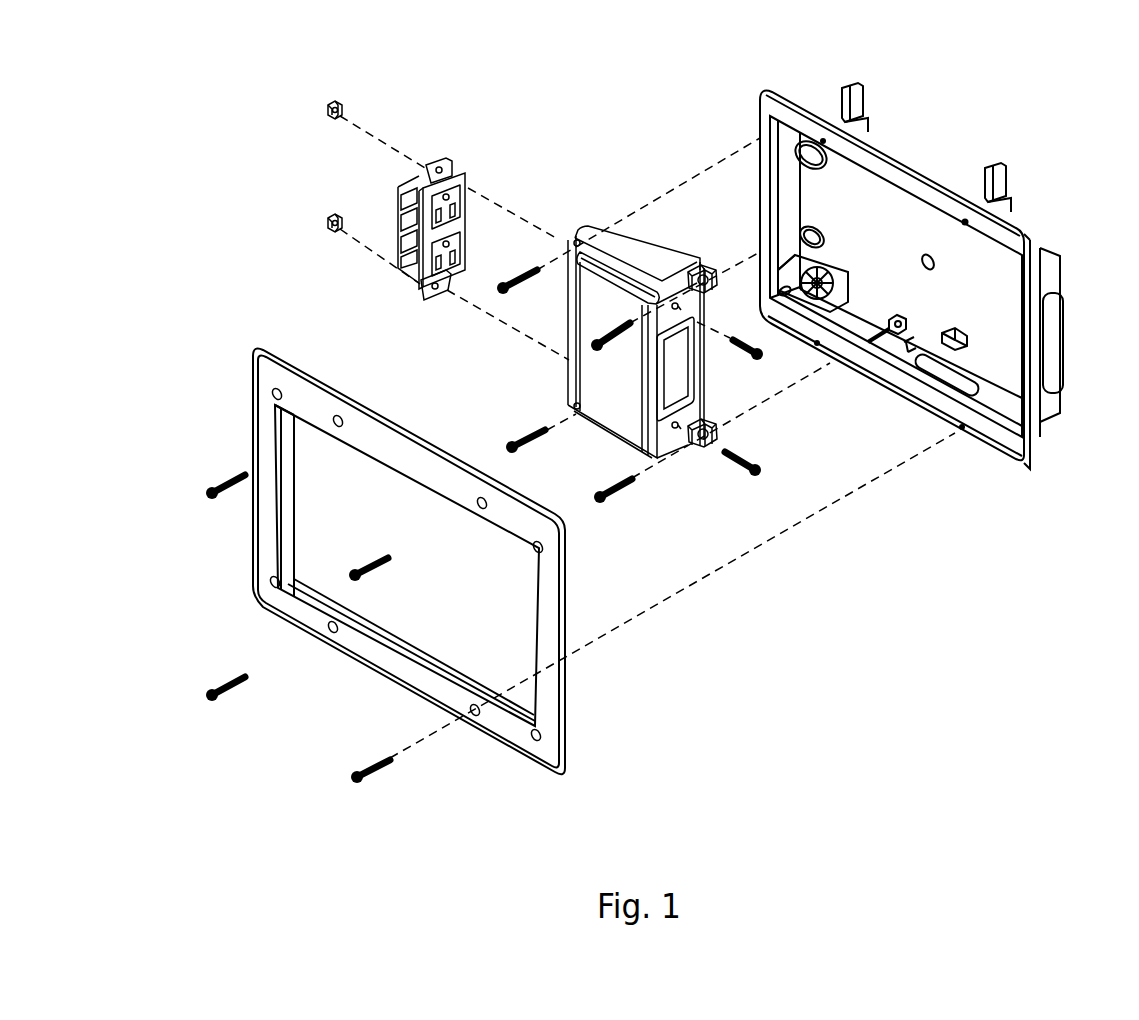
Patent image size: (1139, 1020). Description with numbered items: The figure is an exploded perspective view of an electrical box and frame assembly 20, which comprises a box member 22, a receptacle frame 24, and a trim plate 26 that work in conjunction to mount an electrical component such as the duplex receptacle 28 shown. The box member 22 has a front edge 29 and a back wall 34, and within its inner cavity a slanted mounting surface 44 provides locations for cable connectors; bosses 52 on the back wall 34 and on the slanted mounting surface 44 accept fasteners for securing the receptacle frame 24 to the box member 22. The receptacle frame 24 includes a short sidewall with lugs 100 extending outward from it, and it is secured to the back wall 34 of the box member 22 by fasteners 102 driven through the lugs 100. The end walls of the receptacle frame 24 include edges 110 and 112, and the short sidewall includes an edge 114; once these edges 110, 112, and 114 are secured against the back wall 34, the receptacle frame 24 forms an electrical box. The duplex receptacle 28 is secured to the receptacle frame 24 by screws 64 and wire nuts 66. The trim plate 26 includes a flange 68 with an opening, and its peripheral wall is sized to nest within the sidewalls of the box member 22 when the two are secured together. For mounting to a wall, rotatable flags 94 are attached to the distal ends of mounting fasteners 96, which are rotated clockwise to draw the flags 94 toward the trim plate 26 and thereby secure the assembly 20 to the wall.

The electrical box and frame assembly 20 is at (226, 208).
The box member 22 is at (932, 268).
The receptacle frame 24 is at (680, 337).
The trim plate 26 is at (563, 780).
The duplex receptacle 28 is at (463, 175).
The front edge 29 is at (983, 440).
The back wall 34 is at (892, 280).
The slanted mounting surface 44 is at (825, 305).
The bosses 52 is at (905, 318).
The screws 64 is at (745, 453).
The wire nuts 66 is at (340, 107).
The flange 68 is at (390, 665).
The rotatable flags 94 is at (852, 83).
The mounting fasteners 96 is at (962, 222).
The lugs 100 is at (697, 443).
The fasteners 102 is at (545, 442).
The edge 110 is at (632, 248).
The edge 112 is at (675, 260).
The edge 114 is at (703, 400).